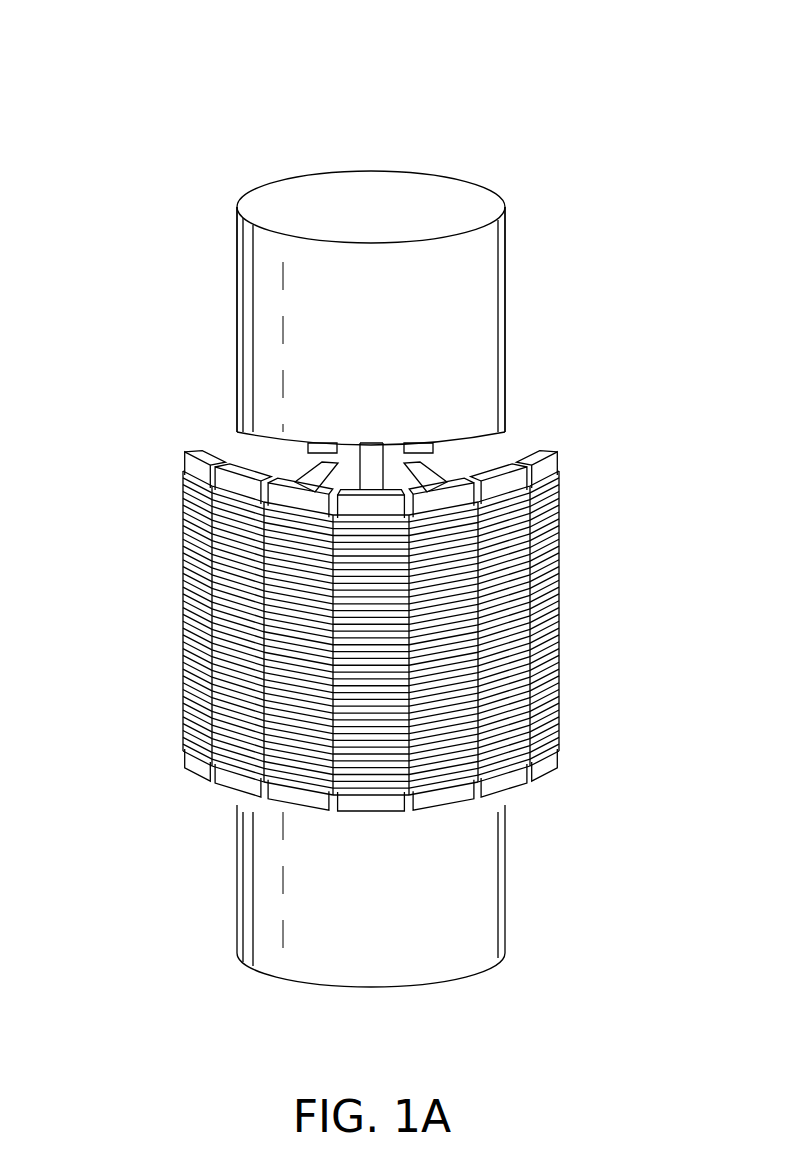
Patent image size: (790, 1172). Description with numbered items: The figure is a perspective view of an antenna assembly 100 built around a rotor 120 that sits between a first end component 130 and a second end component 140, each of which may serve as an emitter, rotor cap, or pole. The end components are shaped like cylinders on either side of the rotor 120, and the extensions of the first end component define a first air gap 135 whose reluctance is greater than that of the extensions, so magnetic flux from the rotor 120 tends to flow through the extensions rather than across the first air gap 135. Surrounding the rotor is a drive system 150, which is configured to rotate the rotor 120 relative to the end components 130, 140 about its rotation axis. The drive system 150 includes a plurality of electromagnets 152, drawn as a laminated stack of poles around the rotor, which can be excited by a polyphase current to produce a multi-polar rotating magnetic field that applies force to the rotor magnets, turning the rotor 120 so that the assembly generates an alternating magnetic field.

The antenna assembly 100 is at (168, 62).
The rotor 120 is at (296, 470).
The first end component 130 is at (460, 190).
The first air gap 135 is at (430, 458).
The second end component 140 is at (468, 970).
The drive system 150 is at (373, 594).
The electromagnets 152 is at (192, 665).